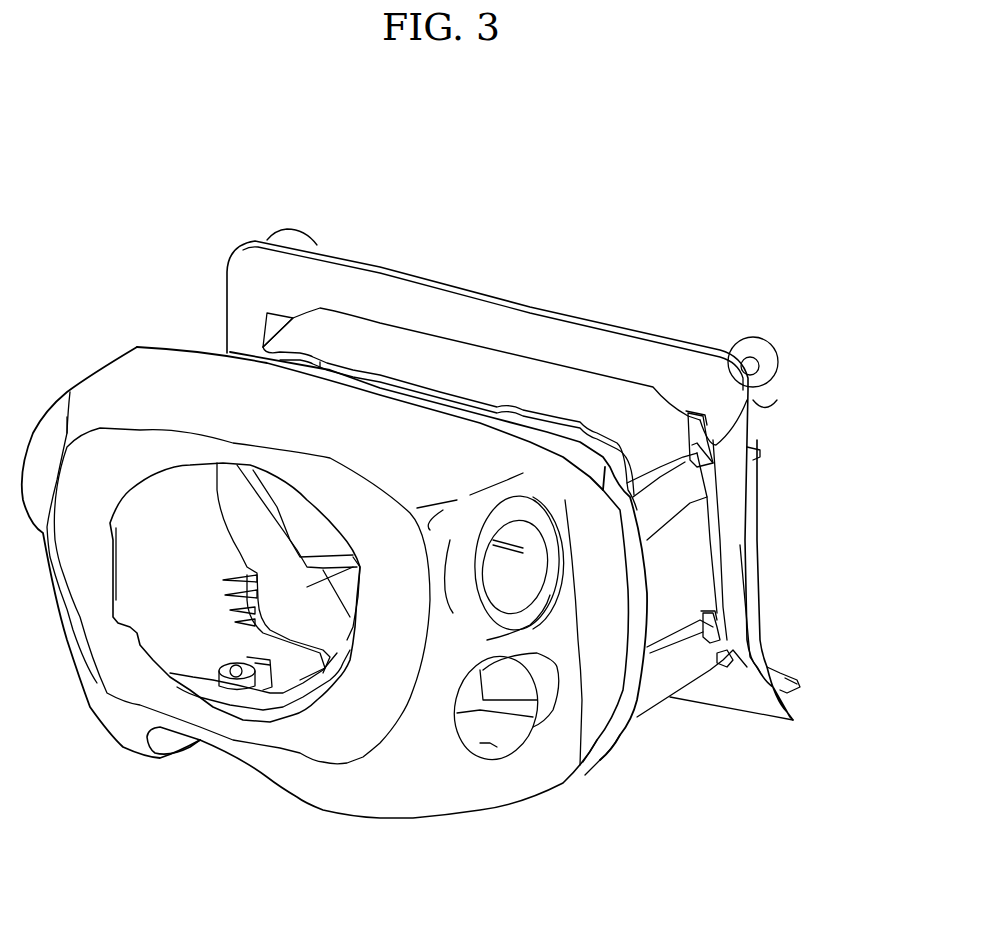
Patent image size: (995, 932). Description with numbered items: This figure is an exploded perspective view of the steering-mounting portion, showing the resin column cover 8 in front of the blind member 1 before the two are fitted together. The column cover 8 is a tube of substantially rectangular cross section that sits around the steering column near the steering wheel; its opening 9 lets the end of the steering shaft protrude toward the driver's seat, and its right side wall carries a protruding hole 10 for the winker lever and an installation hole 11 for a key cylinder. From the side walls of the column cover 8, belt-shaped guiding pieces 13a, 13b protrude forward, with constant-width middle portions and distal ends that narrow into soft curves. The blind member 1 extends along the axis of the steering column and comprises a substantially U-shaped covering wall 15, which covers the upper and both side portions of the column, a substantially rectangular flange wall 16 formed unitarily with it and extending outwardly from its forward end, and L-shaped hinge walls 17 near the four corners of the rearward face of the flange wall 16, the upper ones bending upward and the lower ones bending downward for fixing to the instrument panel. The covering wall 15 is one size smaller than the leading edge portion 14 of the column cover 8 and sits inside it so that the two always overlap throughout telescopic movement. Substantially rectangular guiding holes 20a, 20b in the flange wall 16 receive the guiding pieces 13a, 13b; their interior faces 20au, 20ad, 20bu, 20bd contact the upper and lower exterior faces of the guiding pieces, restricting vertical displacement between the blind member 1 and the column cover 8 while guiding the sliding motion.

The blind member 1 is at (768, 727).
The column cover 8 is at (313, 812).
The opening 9 is at (187, 683).
The protruding hole 10 is at (537, 580).
The installation hole 11 is at (490, 743).
The guiding piece 13a is at (697, 500).
The guiding piece 13b is at (683, 673).
The leading edge portion 14 is at (617, 733).
The covering wall 15 is at (490, 363).
The flange wall 16 is at (613, 327).
The hinge walls 17 is at (287, 232).
The guiding hole 20a is at (707, 453).
The interior face 20au is at (753, 407).
The interior face 20ad is at (710, 493).
The guiding hole 20b is at (730, 647).
The interior face 20bu is at (723, 637).
The interior face 20bd is at (727, 660).